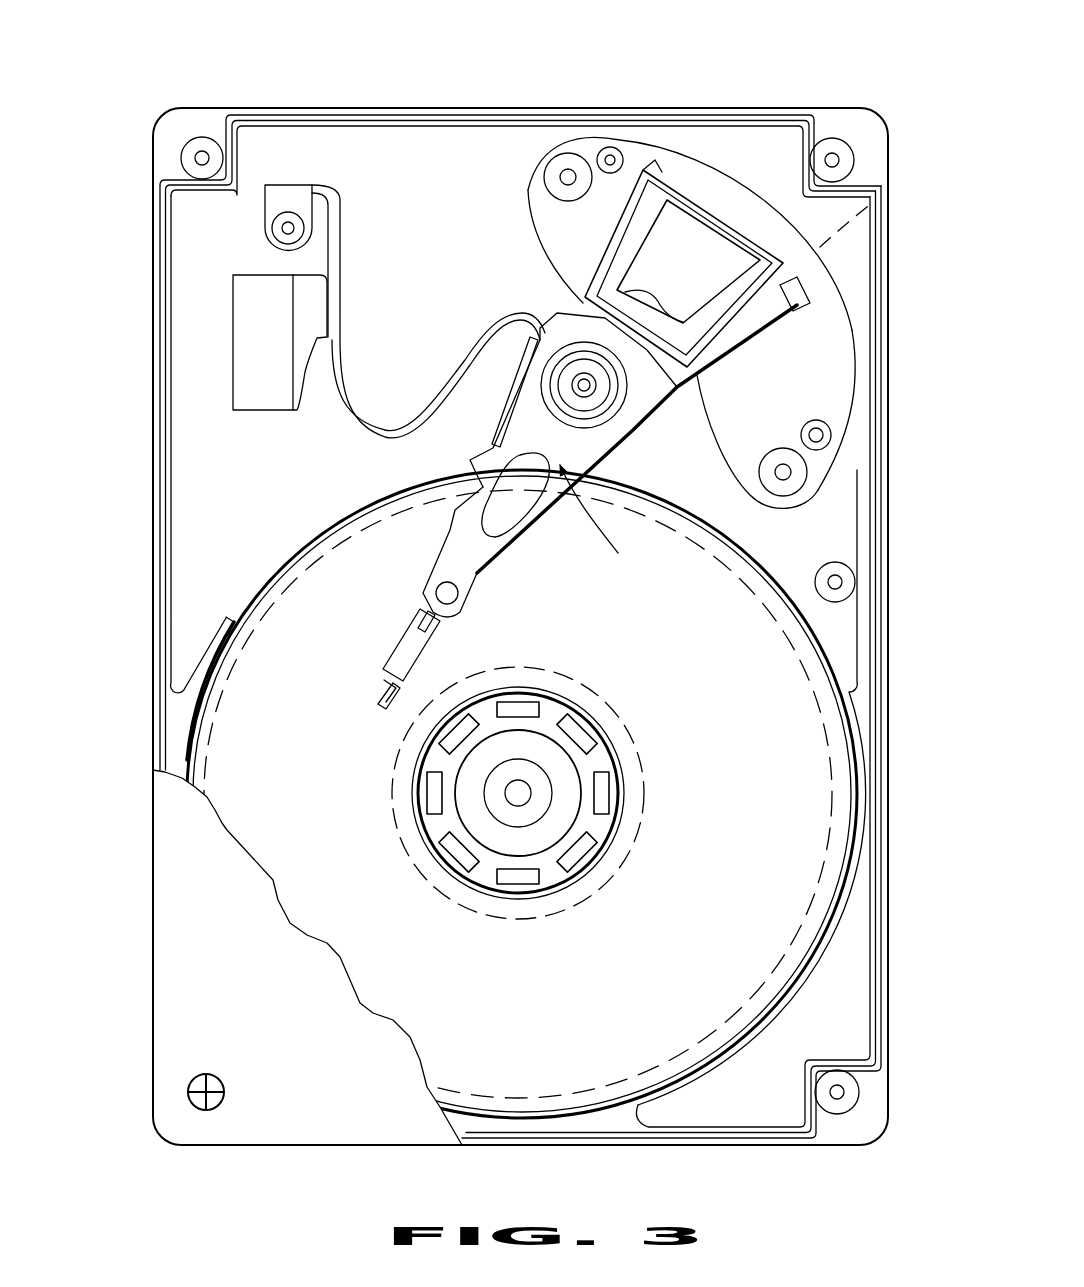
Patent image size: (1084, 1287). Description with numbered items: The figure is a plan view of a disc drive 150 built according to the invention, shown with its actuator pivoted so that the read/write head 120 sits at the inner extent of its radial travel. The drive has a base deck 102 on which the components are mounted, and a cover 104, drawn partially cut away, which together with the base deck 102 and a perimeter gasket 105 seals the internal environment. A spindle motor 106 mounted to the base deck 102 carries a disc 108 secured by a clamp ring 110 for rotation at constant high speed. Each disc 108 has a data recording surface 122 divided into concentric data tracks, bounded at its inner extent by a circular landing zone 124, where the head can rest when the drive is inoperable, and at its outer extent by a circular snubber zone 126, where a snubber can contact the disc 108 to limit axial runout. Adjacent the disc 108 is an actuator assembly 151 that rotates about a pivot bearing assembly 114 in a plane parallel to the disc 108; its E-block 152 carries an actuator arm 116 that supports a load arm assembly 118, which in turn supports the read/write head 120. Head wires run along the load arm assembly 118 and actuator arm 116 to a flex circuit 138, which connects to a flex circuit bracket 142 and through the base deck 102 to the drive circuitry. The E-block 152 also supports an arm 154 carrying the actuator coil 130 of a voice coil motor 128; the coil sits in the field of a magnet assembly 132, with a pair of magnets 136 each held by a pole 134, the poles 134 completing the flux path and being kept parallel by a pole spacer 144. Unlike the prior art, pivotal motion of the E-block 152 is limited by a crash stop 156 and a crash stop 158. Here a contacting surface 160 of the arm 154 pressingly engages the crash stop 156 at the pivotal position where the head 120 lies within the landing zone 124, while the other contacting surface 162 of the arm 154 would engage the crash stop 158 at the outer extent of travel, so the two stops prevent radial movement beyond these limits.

The base deck 102 is at (250, 470).
The cover 104 is at (207, 955).
The perimeter gasket 105 is at (820, 106).
The spindle motor 106 is at (531, 826).
The disc 108 is at (852, 740).
The clamp ring 110 is at (615, 758).
The pivot bearing assembly 114 is at (633, 430).
The actuator arm 116 is at (455, 568).
The load arm assembly 118 is at (403, 652).
The read/write head 120 is at (372, 690).
The data recording surface 122 is at (775, 885).
The landing zone 124 is at (410, 835).
The snubber zone 126 is at (262, 588).
The voice coil motor 128 is at (580, 150).
The actuator coil 130 is at (685, 200).
The magnet assembly 132 is at (845, 470).
The pole 134 is at (855, 345).
The magnet 136 is at (900, 203).
The flex circuit 138 is at (375, 440).
The flex circuit bracket 142 is at (235, 350).
The pole spacer 144 is at (548, 160).
The disc drive 150 is at (262, 80).
The actuator assembly 151 is at (610, 516).
The E-block 152 is at (600, 400).
The arm 154 is at (590, 263).
The crash stop 156 is at (610, 140).
The crash stop 158 is at (832, 443).
The contacting surface 160 is at (630, 165).
The contacting surface 162 is at (812, 298).